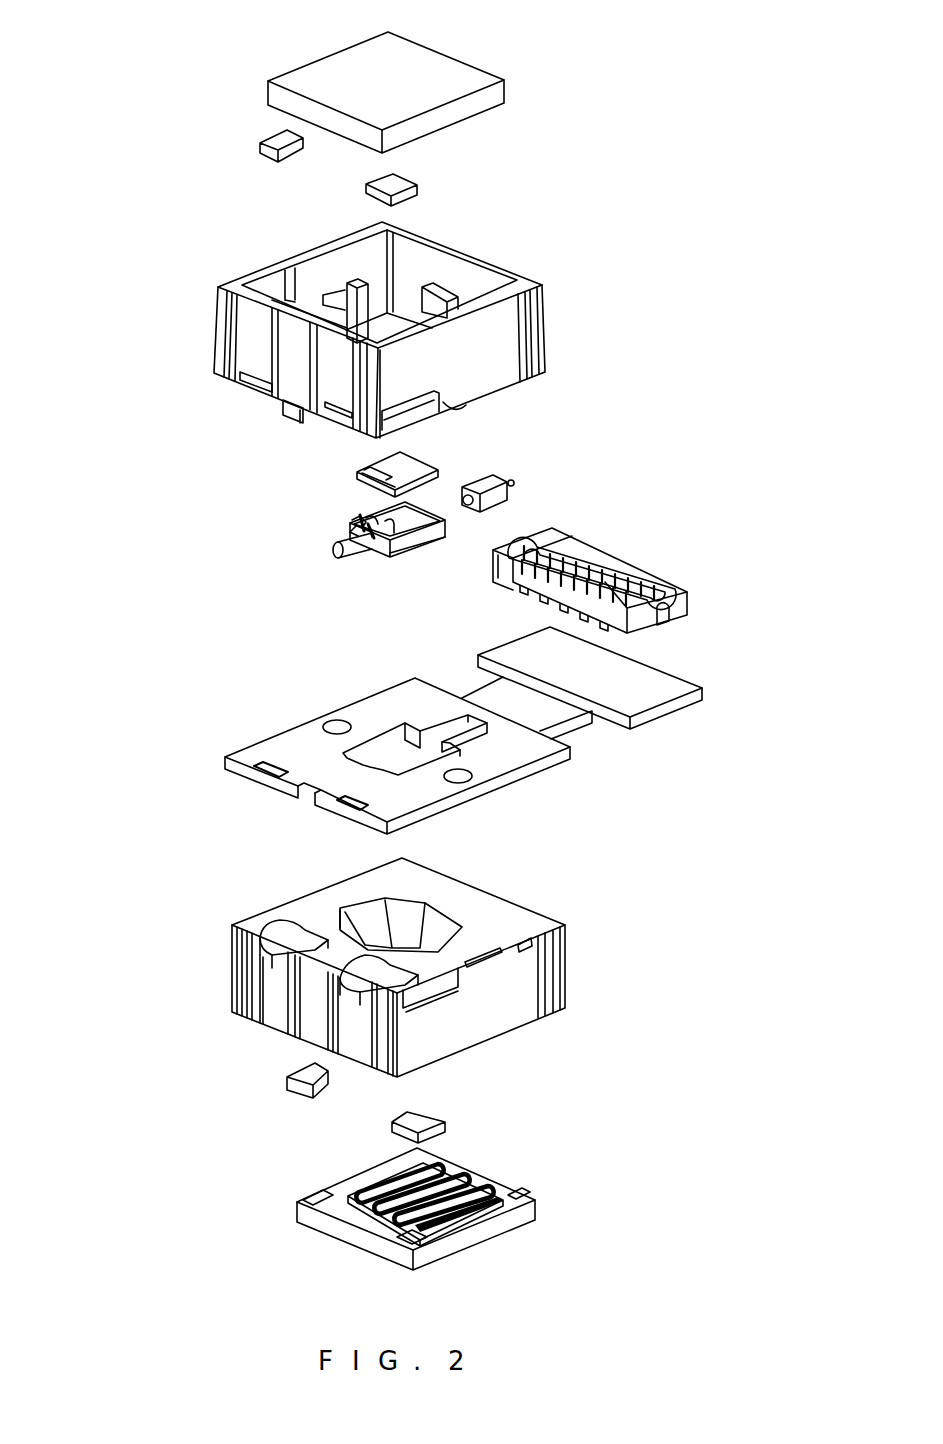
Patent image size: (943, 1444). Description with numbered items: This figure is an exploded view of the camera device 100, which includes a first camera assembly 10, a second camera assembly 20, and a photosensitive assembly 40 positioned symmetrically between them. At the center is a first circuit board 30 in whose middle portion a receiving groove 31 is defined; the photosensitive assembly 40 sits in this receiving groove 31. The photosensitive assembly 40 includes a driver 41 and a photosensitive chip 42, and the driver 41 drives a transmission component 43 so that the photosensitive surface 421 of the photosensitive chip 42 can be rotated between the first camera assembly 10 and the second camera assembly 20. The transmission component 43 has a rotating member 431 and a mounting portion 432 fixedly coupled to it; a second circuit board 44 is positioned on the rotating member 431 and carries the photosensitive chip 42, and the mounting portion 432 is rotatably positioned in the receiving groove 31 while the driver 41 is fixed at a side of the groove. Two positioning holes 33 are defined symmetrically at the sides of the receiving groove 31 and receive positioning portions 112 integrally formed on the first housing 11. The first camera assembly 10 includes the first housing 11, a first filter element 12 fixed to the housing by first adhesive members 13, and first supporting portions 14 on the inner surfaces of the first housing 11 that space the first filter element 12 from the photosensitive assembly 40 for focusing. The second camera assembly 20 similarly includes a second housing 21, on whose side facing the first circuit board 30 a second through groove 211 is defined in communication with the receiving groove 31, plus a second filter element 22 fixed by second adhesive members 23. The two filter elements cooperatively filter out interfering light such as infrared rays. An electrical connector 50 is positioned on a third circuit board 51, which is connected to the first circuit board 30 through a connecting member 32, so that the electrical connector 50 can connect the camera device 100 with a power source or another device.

The camera device 100 is at (133, 42).
The first camera assembly 10 is at (548, 140).
The first housing 11 is at (492, 318).
The first filter element 12 is at (487, 100).
The first adhesive members 13 is at (395, 188).
The first supporting portions 14 is at (352, 308).
The positioning portions 112 is at (457, 407).
The photosensitive assembly 40 is at (593, 452).
The driver 41 is at (495, 497).
The photosensitive chip 42 is at (438, 470).
The photosensitive surface 421 is at (383, 465).
The transmission component 43 is at (246, 565).
The rotating member 431 is at (380, 552).
The mounting portion 432 is at (340, 547).
The second circuit board 44 is at (383, 517).
The electrical connector 50 is at (660, 582).
The third circuit board 51 is at (673, 690).
The first circuit board 30 is at (522, 758).
The receiving groove 31 is at (387, 754).
The connecting member 32 is at (545, 716).
The positioning holes 33 is at (463, 776).
The second camera assembly 20 is at (570, 1068).
The second housing 21 is at (503, 1007).
The second through groove 211 is at (427, 925).
The second filter element 22 is at (515, 1192).
The second adhesive members 23 is at (422, 1122).